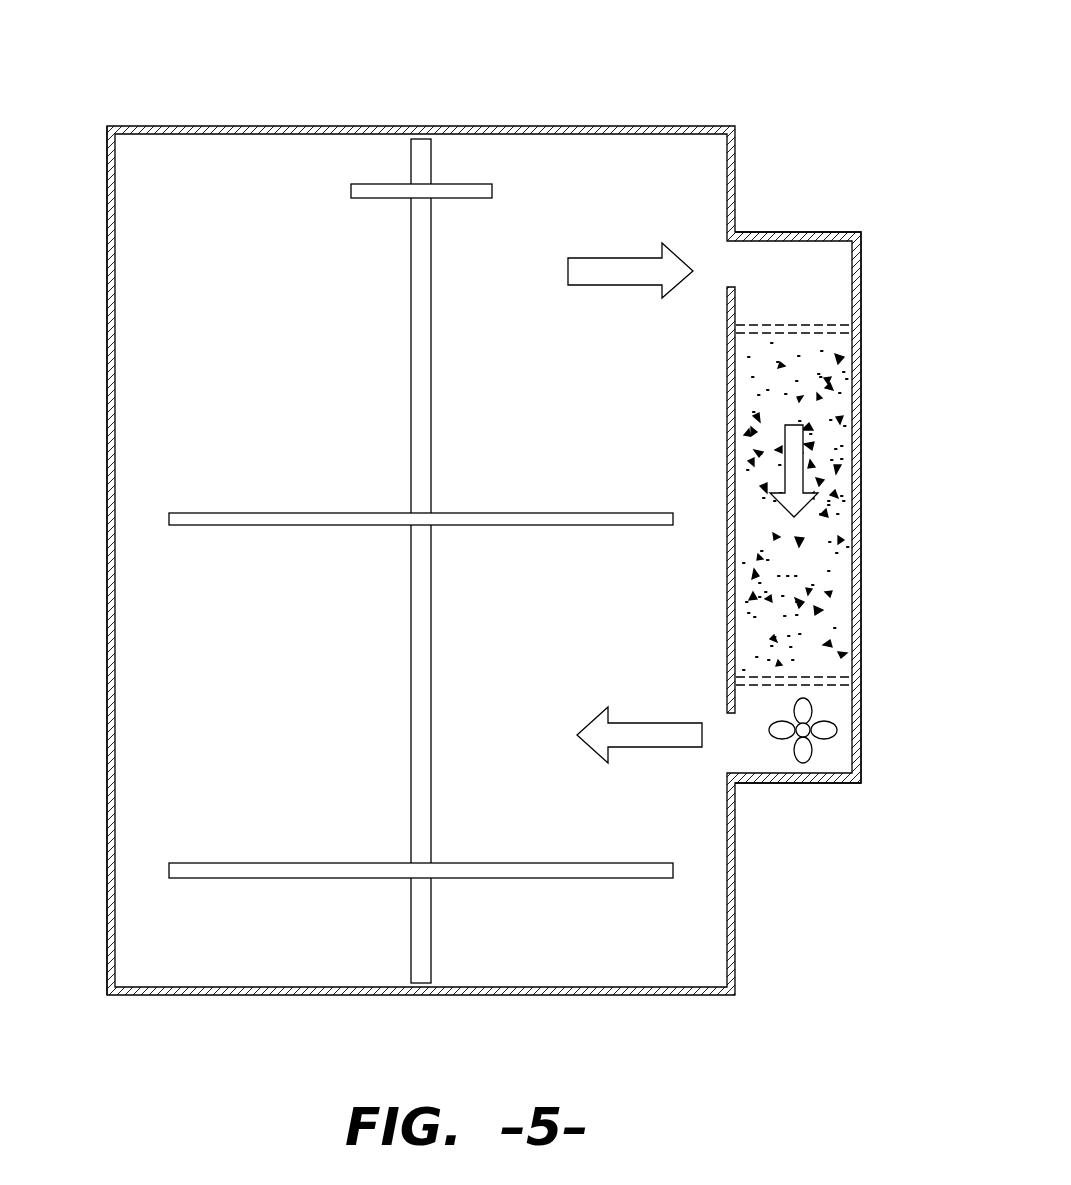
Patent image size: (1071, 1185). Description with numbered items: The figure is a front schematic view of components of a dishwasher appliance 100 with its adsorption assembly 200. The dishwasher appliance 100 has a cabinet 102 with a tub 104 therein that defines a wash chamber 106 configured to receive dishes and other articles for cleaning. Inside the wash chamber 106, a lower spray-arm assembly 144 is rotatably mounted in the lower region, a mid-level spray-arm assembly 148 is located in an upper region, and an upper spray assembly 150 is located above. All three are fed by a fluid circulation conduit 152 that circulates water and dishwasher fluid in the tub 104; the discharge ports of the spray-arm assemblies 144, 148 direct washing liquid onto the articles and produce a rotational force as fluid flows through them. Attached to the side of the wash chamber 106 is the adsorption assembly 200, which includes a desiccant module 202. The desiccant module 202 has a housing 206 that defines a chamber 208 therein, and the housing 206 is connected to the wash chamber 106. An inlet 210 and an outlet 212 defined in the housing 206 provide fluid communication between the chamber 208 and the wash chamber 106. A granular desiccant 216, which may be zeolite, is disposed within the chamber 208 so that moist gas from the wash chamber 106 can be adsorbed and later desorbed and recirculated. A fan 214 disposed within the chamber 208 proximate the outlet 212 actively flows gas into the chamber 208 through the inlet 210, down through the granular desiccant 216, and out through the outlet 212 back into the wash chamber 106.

The dishwasher appliance 100 is at (194, 92).
The cabinet 102 is at (278, 126).
The tub 104 is at (277, 371).
The wash chamber 106 is at (162, 428).
The lower spray-arm assembly 144 is at (300, 878).
The mid-level spray-arm assembly 148 is at (292, 526).
The upper spray assembly 150 is at (378, 198).
The fluid circulation conduit 152 is at (411, 750).
The adsorption assembly 200 is at (782, 230).
The desiccant module 202 is at (829, 321).
The housing 206 is at (824, 232).
The chamber 208 is at (816, 290).
The inlet 210 is at (727, 258).
The outlet 212 is at (735, 743).
The fan 214 is at (809, 737).
The granular desiccant 216 is at (812, 422).